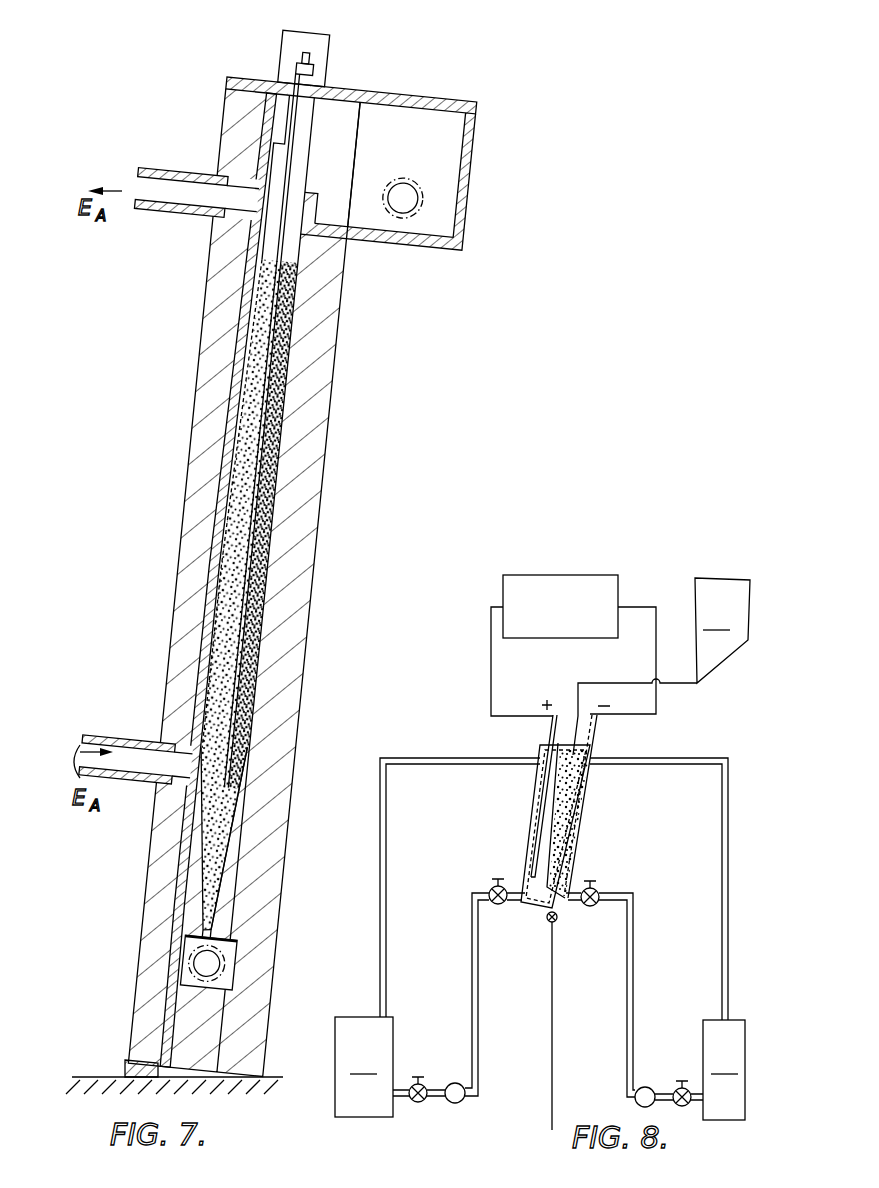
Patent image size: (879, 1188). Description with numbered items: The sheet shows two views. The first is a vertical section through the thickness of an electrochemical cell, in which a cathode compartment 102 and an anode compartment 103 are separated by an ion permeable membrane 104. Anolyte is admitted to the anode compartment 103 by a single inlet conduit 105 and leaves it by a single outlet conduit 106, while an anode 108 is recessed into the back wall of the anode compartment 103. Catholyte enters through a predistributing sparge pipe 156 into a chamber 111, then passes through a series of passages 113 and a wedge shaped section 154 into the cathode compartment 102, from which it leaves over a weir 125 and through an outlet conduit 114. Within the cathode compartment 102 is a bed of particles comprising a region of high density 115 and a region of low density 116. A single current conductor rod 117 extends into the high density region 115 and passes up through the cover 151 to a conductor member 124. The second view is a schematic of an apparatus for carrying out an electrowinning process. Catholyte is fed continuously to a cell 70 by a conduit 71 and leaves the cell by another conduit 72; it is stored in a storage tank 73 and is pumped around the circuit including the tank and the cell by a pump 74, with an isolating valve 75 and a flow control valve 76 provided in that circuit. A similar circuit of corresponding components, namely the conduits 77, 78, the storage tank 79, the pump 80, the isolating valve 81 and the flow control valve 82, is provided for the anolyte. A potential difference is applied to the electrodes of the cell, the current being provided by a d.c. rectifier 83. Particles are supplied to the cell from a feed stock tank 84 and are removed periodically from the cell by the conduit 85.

In FIG. 7, the cathode compartment 102 is at (297, 575).
In FIG. 7, the anode compartment 103 is at (190, 525).
In FIG. 7, the ion permeable membrane 104 is at (262, 246).
In FIG. 7, the inlet conduit 105 is at (125, 735).
In FIG. 7, the outlet conduit 106 is at (181, 212).
In FIG. 7, the anode 108 is at (226, 440).
In FIG. 7, the chamber 111 is at (226, 945).
In FIG. 7, the passages 113 is at (203, 930).
In FIG. 7, the outlet conduit 114 is at (410, 178).
In FIG. 7, the region of high density 115 is at (283, 418).
In FIG. 7, the region of low density 116 is at (252, 360).
In FIG. 7, the current conductor rod 117 is at (290, 248).
In FIG. 7, the conductor member 124 is at (281, 42).
In FIG. 7, the weir 125 is at (315, 195).
In FIG. 7, the cover 151 is at (228, 78).
In FIG. 7, the wedge shaped section 154 is at (210, 845).
In FIG. 7, the predistributing sparge pipe 156 is at (225, 963).
In FIG. 8, the cell 70 is at (582, 849).
In FIG. 8, the conduit 71 is at (632, 952).
In FIG. 8, the conduit 72 is at (672, 757).
In FIG. 8, the storage tank 73 is at (724, 1070).
In FIG. 8, the pump 74 is at (643, 1087).
In FIG. 8, the isolating valve 75 is at (682, 1087).
In FIG. 8, the flow control valve 76 is at (600, 888).
In FIG. 8, the anolyte conduit 77 is at (478, 1000).
In FIG. 8, the anolyte conduit 78 is at (462, 758).
In FIG. 8, the anolyte storage tank 79 is at (364, 1067).
In FIG. 8, the anolyte pump 80 is at (467, 1100).
In FIG. 8, the anolyte isolating valve 81 is at (422, 1102).
In FIG. 8, the anolyte flow control valve 82 is at (488, 888).
In FIG. 8, the d.c. rectifier 83 is at (574, 573).
In FIG. 8, the feed stock tank 84 is at (661, 666).
In FIG. 8, the conduit 85 is at (554, 1000).